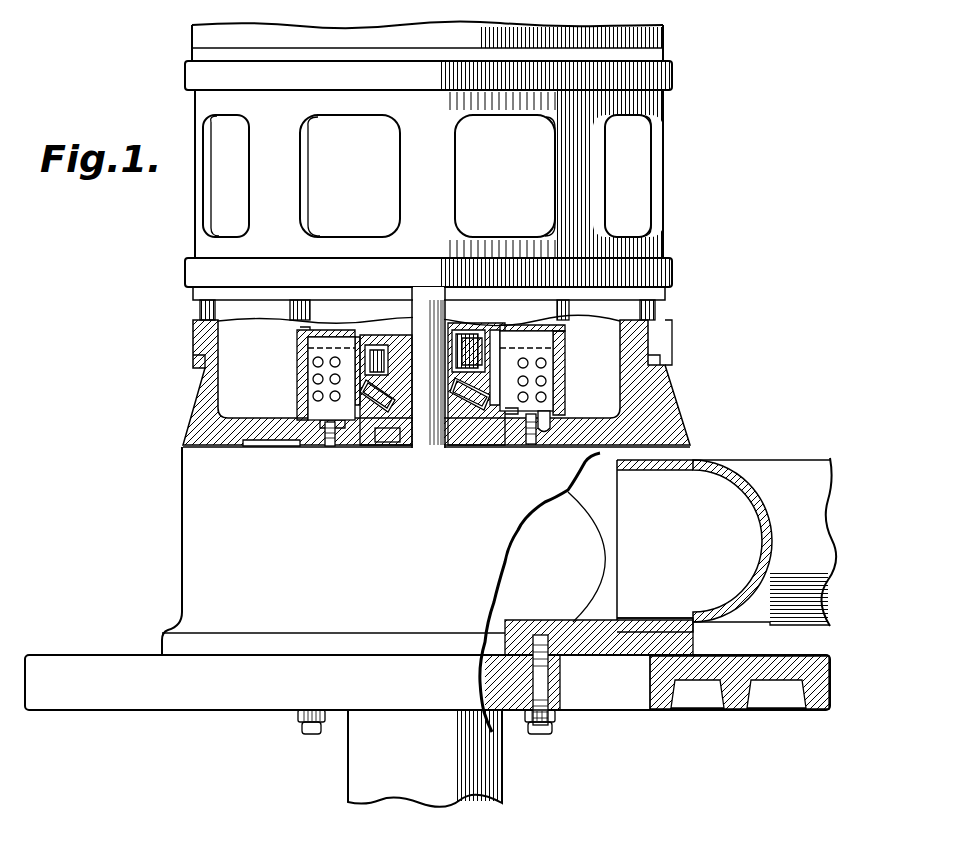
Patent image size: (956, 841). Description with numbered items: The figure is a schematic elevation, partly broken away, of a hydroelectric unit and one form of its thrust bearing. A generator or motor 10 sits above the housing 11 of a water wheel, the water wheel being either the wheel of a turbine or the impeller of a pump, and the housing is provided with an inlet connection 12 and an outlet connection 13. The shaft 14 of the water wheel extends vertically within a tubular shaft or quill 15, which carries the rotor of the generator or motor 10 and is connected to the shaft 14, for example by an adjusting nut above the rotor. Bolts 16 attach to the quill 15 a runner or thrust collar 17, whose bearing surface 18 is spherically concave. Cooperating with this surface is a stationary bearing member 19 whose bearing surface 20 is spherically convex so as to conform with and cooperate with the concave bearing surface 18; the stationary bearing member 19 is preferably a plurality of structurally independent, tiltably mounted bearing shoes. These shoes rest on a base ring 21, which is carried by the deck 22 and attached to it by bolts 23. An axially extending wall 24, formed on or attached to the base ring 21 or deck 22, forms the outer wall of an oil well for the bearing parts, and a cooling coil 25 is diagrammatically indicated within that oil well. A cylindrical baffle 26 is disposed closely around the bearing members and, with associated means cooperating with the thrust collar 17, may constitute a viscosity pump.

The generator or motor 10 is at (592, 163).
The housing of the water wheel 11 is at (190, 561).
The inlet connection 12 is at (358, 761).
The outlet connection 13 is at (752, 482).
The shaft of the water wheel 14 is at (430, 447).
The tubular shaft or quill 15 is at (463, 330).
The bolts 16 is at (478, 340).
The runner or thrust collar 17 is at (508, 347).
The bearing surface of the thrust collar 18 is at (508, 378).
The stationary bearing member 19 is at (508, 401).
The bearing surface of the stationary bearing member 20 is at (352, 388).
The base ring 21 is at (387, 440).
The deck 22 is at (271, 452).
The bolts 23 is at (330, 444).
The axially extending wall 24 is at (536, 446).
The cooling coil 25 is at (318, 362).
The cylindrical baffle 26 is at (350, 340).